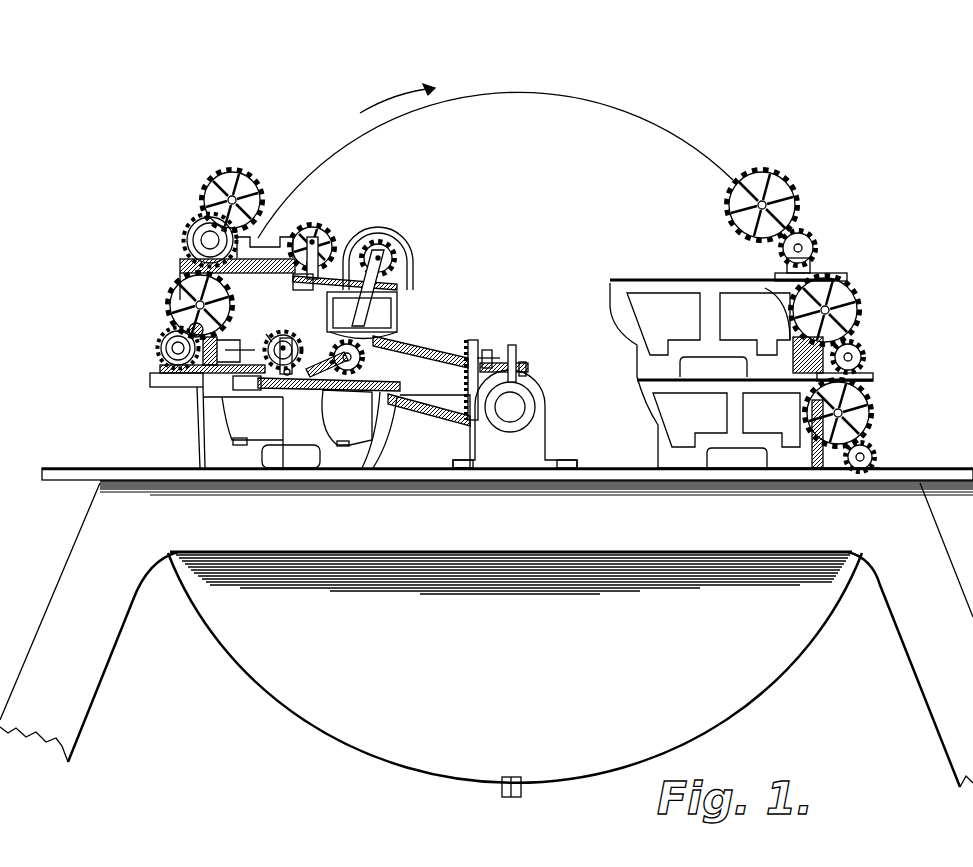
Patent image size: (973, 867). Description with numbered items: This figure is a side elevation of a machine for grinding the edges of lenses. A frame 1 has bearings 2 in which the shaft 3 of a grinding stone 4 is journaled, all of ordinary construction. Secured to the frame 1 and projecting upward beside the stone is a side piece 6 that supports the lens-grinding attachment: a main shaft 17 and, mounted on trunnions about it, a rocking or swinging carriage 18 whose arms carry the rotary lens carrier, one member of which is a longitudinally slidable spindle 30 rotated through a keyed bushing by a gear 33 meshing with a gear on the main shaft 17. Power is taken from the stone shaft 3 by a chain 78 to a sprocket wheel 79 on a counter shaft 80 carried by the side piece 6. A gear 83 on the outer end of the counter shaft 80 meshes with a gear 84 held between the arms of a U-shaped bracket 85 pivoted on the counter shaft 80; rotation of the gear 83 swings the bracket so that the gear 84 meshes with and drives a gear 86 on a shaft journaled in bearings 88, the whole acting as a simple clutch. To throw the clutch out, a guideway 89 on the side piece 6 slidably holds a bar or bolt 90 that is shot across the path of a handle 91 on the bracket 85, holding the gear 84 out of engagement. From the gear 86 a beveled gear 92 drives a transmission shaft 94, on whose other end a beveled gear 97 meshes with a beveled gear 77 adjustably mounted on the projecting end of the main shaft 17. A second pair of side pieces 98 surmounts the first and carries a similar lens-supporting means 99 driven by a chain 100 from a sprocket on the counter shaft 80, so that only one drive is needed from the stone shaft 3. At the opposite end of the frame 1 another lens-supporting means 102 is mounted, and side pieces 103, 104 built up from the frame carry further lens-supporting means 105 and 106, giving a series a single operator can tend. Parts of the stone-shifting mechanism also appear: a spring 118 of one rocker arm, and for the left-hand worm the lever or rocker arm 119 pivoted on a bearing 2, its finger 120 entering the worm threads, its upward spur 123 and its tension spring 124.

The frame 1 is at (97, 664).
The bearings 2 is at (530, 457).
The shaft 3 is at (500, 437).
The grinding stone 4 is at (645, 155).
The side piece 6 is at (243, 445).
The main shaft 17 is at (172, 350).
The rocking or swinging carriage 18 is at (188, 320).
The longitudinally slidable spindle 30 is at (196, 303).
The gear 33 is at (192, 287).
The beveled gear 77 is at (178, 357).
The chain 78 is at (417, 403).
The sprocket wheel 79 is at (395, 325).
The counter shaft 80 is at (343, 423).
The gear 83 is at (386, 366).
The gear 84 is at (325, 392).
The U-shaped bracket 85 is at (290, 374).
The gear 86 is at (262, 325).
The bearings 88 is at (287, 372).
The guideway 89 is at (283, 380).
The bar or bolt 90 is at (250, 388).
The handle 91 is at (316, 366).
The beveled gear 92 is at (283, 332).
The transmission shaft 94 is at (200, 373).
The beveled gear 97 is at (200, 370).
The second pair of side pieces 98 is at (267, 280).
The lens-supporting means 99 is at (207, 217).
The chain 100 is at (382, 240).
The lens supporting means 102 is at (870, 430).
The side piece 103 is at (700, 463).
The side piece 104 is at (657, 290).
The lens supporting means 105 is at (855, 340).
The lens supporting means 106 is at (790, 233).
The spring 118 is at (514, 412).
The lever or rocker arm 119 is at (517, 346).
The finger 120 is at (526, 372).
The spur 123 is at (482, 355).
The spring 124 is at (433, 383).